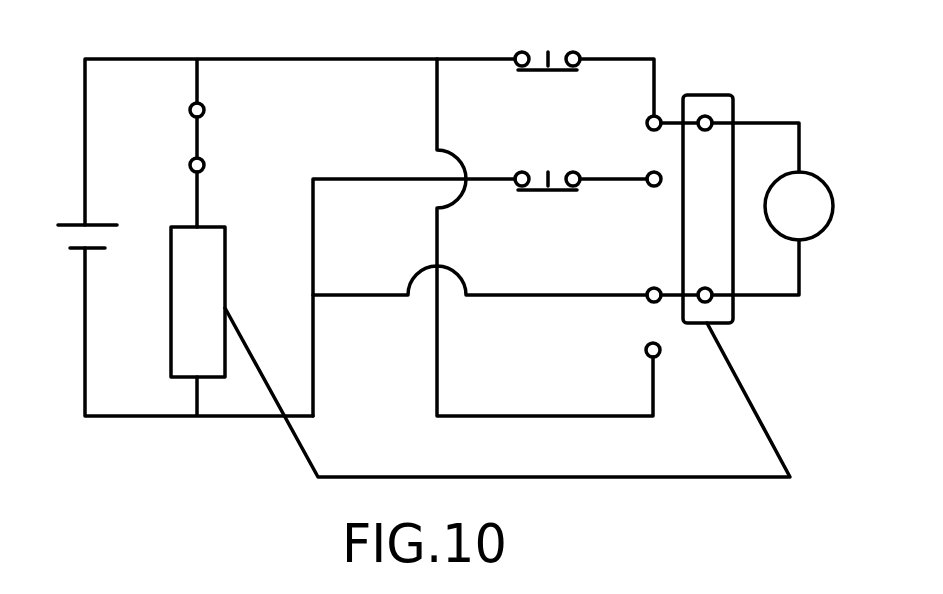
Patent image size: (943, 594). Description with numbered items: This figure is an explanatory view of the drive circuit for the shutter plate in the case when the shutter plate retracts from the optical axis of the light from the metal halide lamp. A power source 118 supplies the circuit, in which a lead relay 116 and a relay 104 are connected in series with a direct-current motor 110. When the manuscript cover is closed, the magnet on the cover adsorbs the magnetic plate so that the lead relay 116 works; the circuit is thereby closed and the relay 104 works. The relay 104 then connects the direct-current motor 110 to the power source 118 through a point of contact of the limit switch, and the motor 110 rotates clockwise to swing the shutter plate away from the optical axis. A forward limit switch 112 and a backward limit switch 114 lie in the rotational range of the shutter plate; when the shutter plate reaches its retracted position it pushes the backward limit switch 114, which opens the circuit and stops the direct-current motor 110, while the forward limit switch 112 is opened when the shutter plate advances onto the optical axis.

The relay 104 is at (445, 357).
The direct-current motor 110 is at (826, 207).
The forward limit switch 112 is at (547, 208).
The backward limit switch 114 is at (547, 89).
The lead relay 116 is at (227, 137).
The power source 118 is at (62, 269).